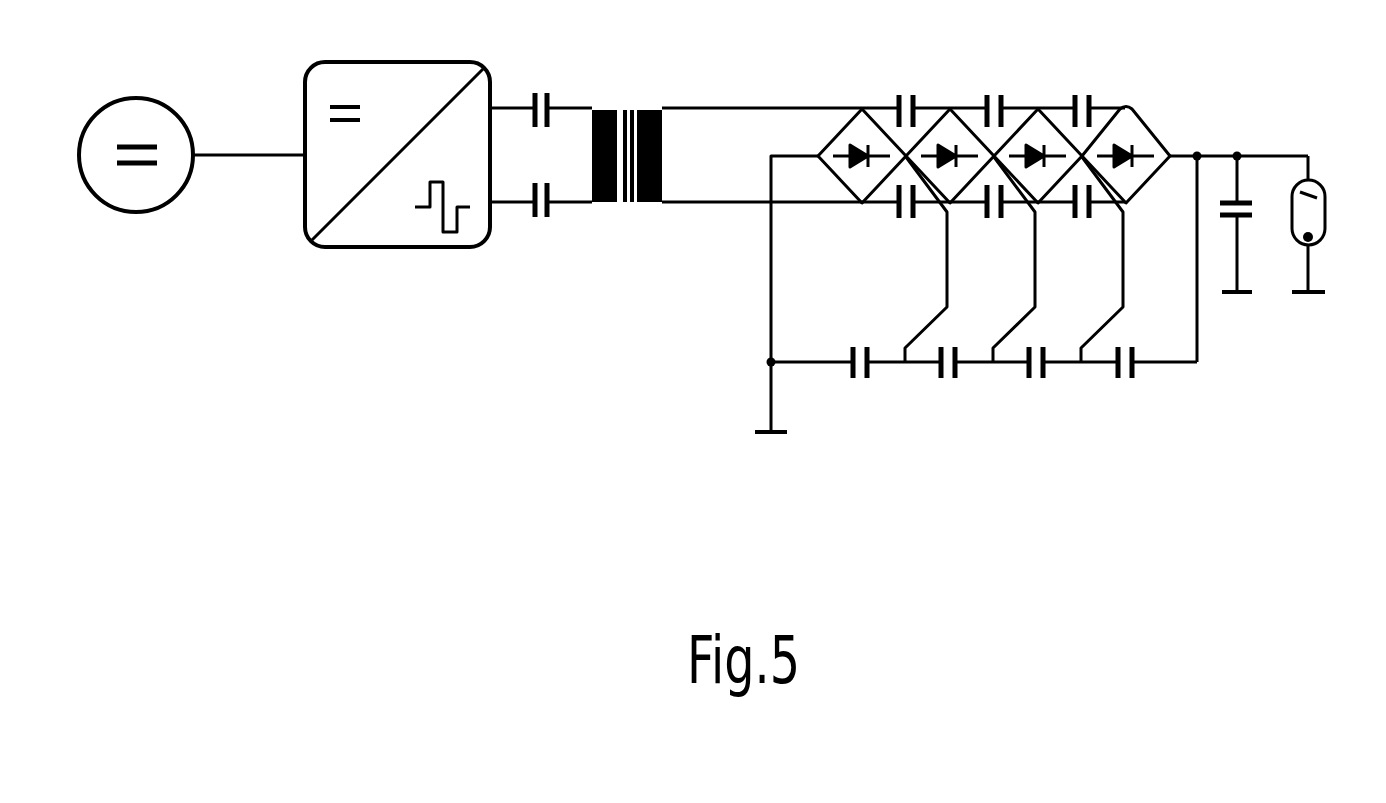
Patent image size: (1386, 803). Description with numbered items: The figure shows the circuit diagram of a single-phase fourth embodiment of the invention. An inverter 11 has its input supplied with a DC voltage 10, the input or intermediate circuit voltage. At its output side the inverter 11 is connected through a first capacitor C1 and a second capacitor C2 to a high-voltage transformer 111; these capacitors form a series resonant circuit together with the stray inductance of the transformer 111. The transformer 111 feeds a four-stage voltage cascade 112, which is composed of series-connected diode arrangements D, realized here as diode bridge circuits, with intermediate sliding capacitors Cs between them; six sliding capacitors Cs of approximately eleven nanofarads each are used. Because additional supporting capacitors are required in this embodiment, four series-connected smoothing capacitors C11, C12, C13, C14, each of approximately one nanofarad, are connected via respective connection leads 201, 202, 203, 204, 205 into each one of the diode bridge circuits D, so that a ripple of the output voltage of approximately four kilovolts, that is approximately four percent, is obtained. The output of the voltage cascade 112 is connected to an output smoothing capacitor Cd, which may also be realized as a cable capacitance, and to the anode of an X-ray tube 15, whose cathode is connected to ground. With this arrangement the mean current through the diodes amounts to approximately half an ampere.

The DC voltage 10 is at (136, 176).
The inverter 11 is at (397, 179).
The first capacitor C1 is at (540, 90).
The second capacitor C2 is at (540, 220).
The transformer 111 is at (627, 133).
The voltage cascade 112 is at (1072, 152).
The diode arrangement D is at (994, 138).
The sliding capacitor Cs is at (995, 155).
The connection lead 201 is at (787, 294).
The connection lead 202 is at (952, 259).
The connection lead 203 is at (1040, 259).
The connection lead 204 is at (1128, 259).
The connection lead 205 is at (1223, 257).
The smoothing capacitor C11 is at (856, 384).
The smoothing capacitor C12 is at (947, 384).
The smoothing capacitor C13 is at (1033, 384).
The smoothing capacitor C14 is at (1120, 384).
The output smoothing capacitor Cd is at (1248, 224).
The X-ray tube 15 is at (1327, 224).